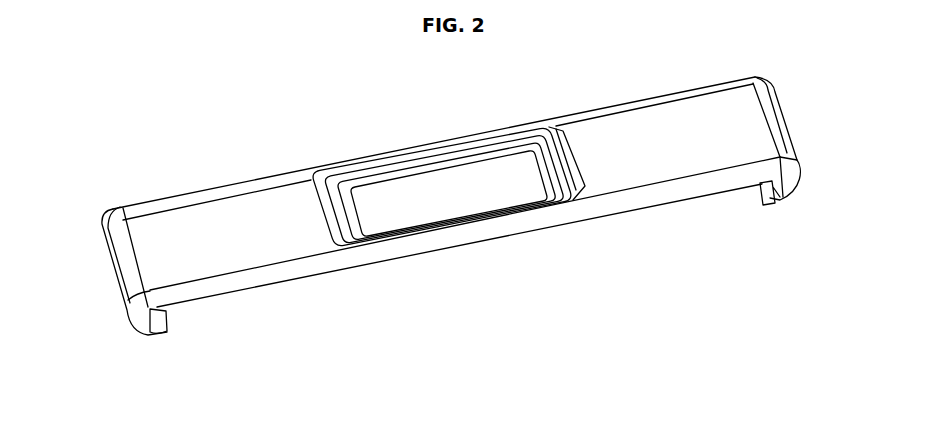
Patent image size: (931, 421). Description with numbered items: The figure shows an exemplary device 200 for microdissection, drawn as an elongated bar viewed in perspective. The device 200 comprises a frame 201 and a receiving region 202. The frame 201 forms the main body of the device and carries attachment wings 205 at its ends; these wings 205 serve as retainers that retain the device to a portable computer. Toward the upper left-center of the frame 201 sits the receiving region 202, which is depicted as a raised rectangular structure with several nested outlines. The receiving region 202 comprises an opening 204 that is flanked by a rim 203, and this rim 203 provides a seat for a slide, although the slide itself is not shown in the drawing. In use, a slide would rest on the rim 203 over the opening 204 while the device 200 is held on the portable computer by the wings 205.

The device 200 is at (451, 222).
The frame 201 is at (650, 147).
The receiving region 202 is at (590, 230).
The rim 203 is at (531, 146).
The opening 204 is at (452, 185).
The attachment wings 205 is at (175, 318).